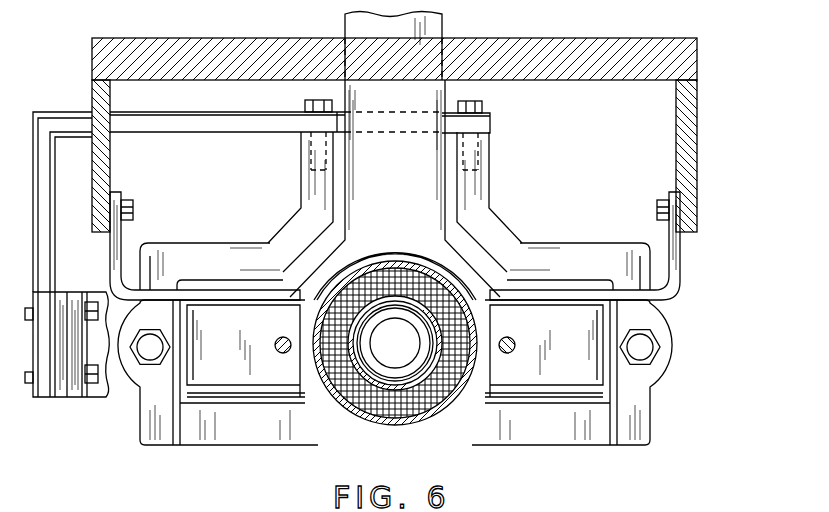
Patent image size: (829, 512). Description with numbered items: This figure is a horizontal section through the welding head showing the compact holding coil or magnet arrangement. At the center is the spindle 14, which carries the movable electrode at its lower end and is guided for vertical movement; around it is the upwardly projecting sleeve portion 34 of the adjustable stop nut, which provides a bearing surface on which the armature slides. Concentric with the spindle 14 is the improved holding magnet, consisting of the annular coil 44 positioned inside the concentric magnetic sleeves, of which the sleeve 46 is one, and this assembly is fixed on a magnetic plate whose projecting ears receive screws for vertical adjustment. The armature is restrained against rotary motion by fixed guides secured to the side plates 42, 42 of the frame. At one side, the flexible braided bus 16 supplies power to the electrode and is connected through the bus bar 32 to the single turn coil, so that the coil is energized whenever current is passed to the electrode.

The spindle 14 is at (393, 330).
The flexible braided bus 16 is at (92, 398).
The bus bar 32 is at (47, 120).
The upwardly projecting sleeve portion 34 is at (397, 367).
The side plates 42 is at (110, 163).
The annular coil 44 is at (443, 408).
The magnetic sleeve 46 is at (353, 408).